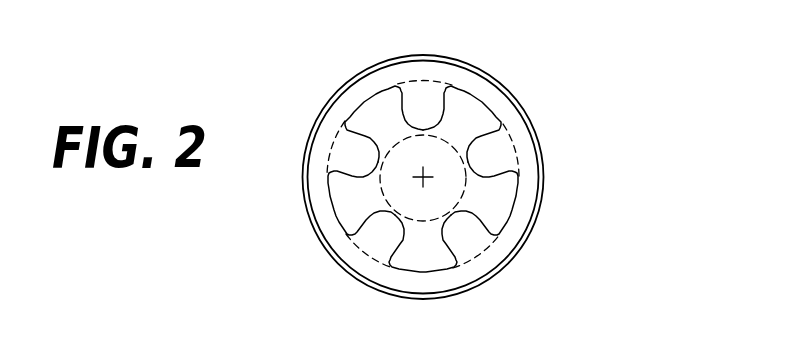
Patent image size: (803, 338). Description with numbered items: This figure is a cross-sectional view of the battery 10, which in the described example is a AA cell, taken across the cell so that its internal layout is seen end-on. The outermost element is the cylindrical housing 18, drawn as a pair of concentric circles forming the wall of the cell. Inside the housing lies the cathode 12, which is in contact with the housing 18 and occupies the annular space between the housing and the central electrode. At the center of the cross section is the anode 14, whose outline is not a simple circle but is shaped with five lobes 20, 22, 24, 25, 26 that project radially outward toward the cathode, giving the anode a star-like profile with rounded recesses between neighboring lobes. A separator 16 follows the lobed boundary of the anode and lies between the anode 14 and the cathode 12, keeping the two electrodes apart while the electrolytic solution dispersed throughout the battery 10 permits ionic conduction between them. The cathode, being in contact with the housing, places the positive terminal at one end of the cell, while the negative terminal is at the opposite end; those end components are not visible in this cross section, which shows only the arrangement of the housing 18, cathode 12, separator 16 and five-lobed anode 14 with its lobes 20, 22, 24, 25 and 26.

The battery 10 is at (463, 164).
The cathode 12 is at (530, 162).
The anode 14 is at (400, 153).
The separator 16 is at (472, 227).
The cylindrical housing 18 is at (472, 63).
The lobe 20 is at (343, 202).
The lobe 22 is at (372, 117).
The lobe 24 is at (478, 118).
The lobe 25 is at (503, 197).
The lobe 26 is at (408, 258).